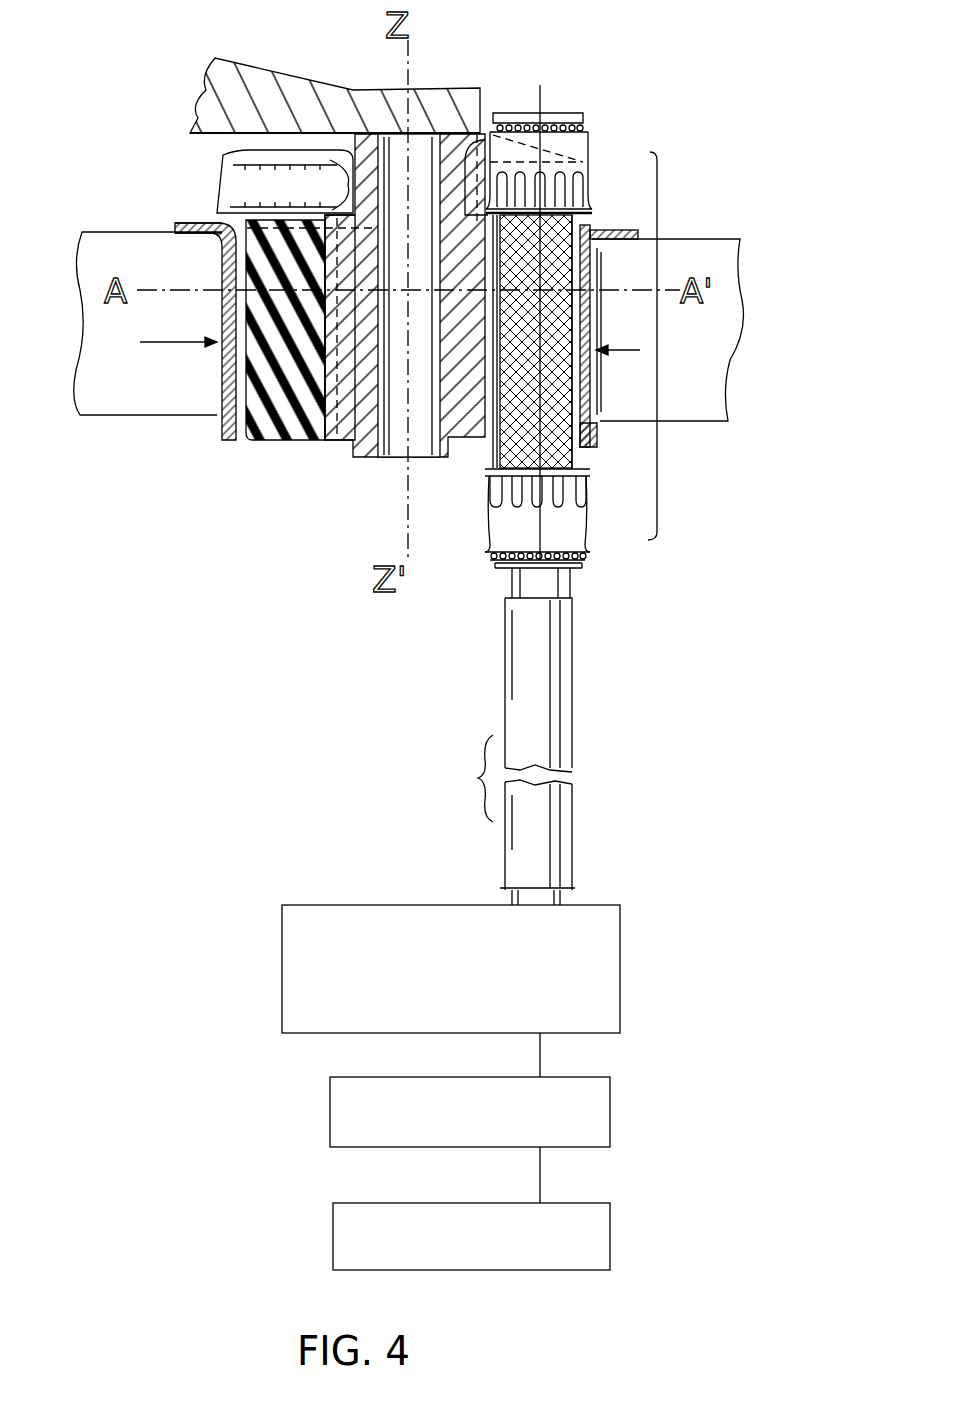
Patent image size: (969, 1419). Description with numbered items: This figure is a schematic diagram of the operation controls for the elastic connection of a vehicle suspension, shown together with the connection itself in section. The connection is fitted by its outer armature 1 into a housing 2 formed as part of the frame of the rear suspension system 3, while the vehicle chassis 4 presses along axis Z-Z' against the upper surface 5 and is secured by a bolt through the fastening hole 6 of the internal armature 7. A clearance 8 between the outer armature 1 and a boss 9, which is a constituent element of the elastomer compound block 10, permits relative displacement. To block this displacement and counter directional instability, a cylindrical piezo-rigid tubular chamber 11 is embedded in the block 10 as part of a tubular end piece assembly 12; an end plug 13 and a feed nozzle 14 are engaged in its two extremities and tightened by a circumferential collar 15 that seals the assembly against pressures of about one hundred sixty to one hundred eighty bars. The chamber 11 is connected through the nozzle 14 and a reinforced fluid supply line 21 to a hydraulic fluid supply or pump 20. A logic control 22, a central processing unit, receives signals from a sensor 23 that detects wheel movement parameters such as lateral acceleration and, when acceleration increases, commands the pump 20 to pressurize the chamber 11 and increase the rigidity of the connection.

The outer armature 1 is at (205, 226).
The housing 2 is at (217, 352).
The rear suspension system frame 3 is at (708, 333).
The vehicle chassis 4 is at (247, 97).
The upper surface 5 is at (420, 124).
The fastening hole 6 is at (390, 448).
The internal armature 7 is at (345, 358).
The clearance 8 is at (237, 272).
The boss 9 is at (265, 422).
The elastomer compound block 10 is at (273, 197).
The piezo-rigid tubular chamber 11 is at (587, 226).
The tubular end piece assembly 12 is at (667, 360).
The end plug 13 is at (562, 106).
The feed nozzle 14 is at (553, 580).
The circumferential collar 15 is at (594, 170).
The fluid supply or pump 20 is at (607, 923).
The fluid supply line 21 is at (560, 703).
The logic control 22 is at (600, 1110).
The sensor 23 is at (602, 1238).